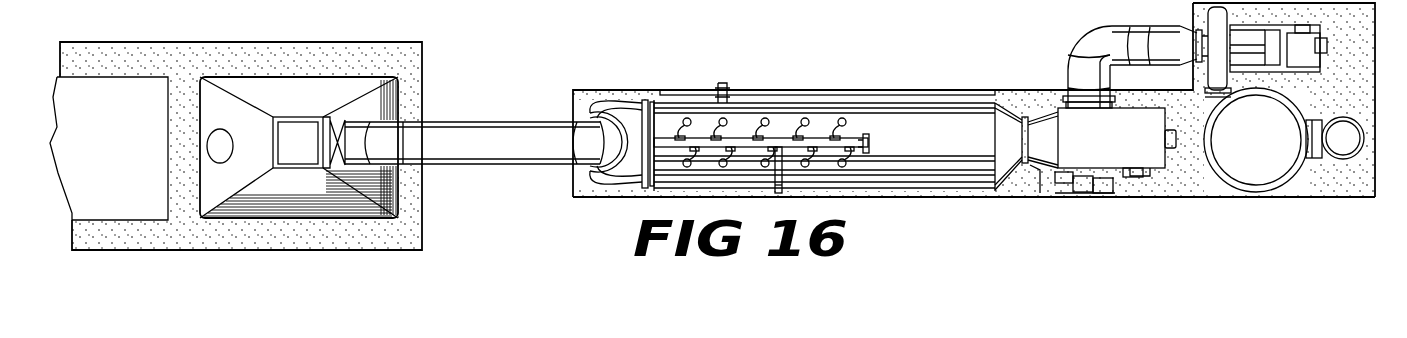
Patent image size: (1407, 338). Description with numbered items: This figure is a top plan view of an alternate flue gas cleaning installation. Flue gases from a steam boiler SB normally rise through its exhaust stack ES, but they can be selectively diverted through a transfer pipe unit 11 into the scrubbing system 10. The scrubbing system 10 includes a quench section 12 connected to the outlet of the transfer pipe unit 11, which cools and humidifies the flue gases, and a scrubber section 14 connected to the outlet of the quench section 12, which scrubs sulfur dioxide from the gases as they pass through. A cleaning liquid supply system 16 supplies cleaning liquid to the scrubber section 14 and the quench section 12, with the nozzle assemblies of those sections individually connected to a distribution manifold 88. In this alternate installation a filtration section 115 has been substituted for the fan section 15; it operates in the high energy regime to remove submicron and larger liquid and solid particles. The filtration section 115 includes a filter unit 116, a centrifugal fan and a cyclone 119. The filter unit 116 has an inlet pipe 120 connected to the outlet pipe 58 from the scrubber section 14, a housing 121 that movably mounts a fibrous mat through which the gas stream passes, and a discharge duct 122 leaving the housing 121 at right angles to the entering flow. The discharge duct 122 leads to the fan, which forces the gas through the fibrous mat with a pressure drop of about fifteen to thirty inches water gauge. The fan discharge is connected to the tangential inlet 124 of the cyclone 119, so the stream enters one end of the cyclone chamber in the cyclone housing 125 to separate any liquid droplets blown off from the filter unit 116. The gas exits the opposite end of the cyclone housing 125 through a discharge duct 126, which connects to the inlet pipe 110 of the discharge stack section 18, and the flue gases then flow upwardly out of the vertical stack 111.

The steam boiler SB is at (188, 64).
The exhaust stack ES is at (320, 104).
The scrubbing system 10 is at (824, 135).
The transfer pipe unit 11 is at (489, 124).
The quench section 12 is at (590, 168).
The scrubber section 14 is at (857, 100).
The fan section 15 is at (763, 118).
The cleaning liquid supply system 16 is at (777, 194).
The distribution manifold 88 is at (869, 141).
The outlet pipe 58 is at (1020, 115).
The inlet pipe 120 is at (1039, 193).
The filtration section 115 is at (1083, 25).
The discharge duct 122 is at (1152, 30).
The filter unit 116 is at (1126, 178).
The housing 121 is at (1139, 165).
The tangential inlet 124 is at (1215, 108).
The discharge duct 126 is at (1296, 115).
The cyclone 119 is at (1236, 193).
The cyclone housing 125 is at (1260, 190).
The inlet pipe 110 is at (1313, 160).
The discharge stack section 18 is at (1358, 120).
The vertical stack 111 is at (1365, 139).